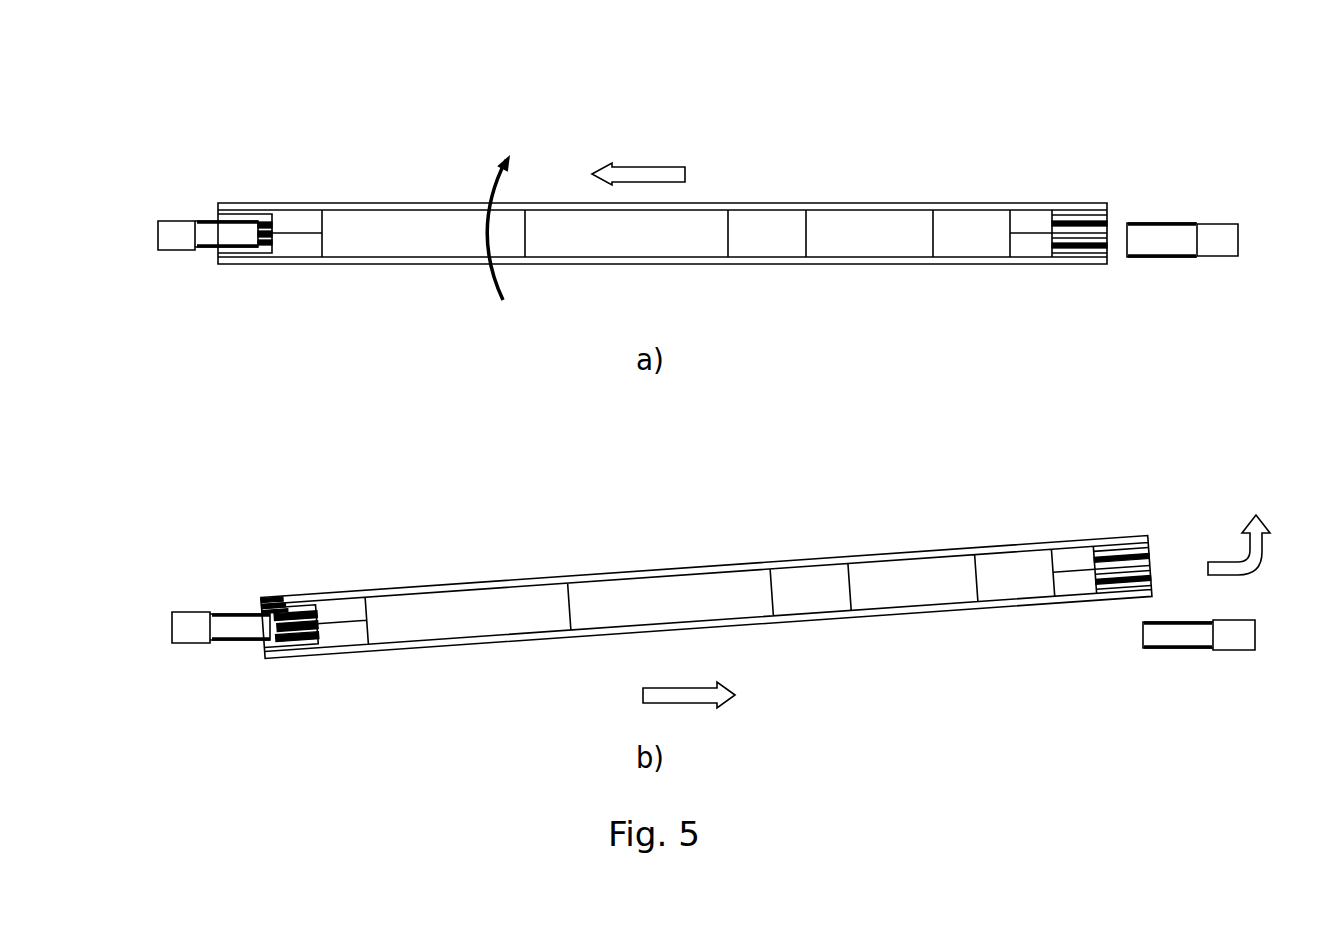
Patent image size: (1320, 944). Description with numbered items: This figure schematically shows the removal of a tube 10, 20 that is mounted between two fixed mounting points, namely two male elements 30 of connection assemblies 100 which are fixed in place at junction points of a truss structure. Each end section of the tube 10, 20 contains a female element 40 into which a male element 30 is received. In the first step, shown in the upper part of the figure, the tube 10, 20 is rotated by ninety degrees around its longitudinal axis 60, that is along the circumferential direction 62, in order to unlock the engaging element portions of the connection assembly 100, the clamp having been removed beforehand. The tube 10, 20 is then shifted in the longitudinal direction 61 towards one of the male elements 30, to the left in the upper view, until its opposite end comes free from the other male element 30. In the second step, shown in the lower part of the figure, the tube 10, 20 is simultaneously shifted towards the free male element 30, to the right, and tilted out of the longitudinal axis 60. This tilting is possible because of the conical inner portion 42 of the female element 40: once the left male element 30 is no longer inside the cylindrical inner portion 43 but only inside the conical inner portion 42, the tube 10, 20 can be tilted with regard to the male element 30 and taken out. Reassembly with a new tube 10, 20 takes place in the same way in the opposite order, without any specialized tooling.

The first tube 10 is at (685, 354).
The second tube 20 is at (832, 195).
The male element 30 is at (190, 200).
The female element 40 is at (277, 245).
The conical inner portion 42 is at (283, 595).
The cylindrical inner portion 43 is at (302, 597).
The longitudinal axis 60 is at (891, 382).
The longitudinal direction 61 is at (630, 163).
The circumferential direction 62 is at (457, 287).
The connection assembly 100 is at (267, 178).